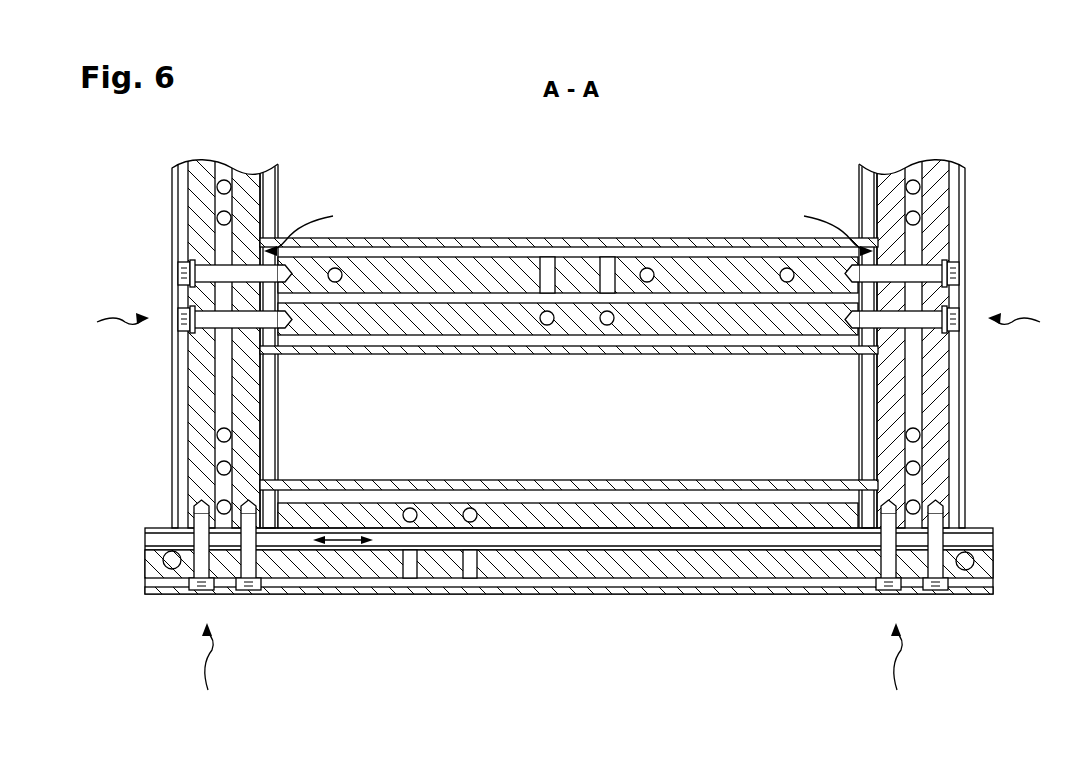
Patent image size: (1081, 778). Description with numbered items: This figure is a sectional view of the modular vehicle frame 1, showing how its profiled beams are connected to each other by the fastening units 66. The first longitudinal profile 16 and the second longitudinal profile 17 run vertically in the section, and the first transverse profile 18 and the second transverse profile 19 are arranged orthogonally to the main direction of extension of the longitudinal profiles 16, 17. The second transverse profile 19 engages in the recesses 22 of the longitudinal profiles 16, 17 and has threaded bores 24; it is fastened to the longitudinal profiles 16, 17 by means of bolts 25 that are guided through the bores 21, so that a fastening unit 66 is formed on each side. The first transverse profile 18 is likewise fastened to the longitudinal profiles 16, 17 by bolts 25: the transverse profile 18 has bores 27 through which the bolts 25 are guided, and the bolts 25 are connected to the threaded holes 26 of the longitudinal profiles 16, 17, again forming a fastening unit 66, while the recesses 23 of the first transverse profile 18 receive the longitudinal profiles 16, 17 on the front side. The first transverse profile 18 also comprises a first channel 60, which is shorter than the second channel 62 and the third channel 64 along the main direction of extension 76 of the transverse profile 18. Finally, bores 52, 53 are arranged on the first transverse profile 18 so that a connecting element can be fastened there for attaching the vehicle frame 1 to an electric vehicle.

The modular vehicle frame 1 is at (708, 160).
The first longitudinal profile 16 is at (233, 186).
The second longitudinal profile 17 is at (893, 186).
The first transverse profile 18 is at (640, 514).
The second transverse profile 19 is at (471, 268).
The bores 21 is at (192, 263).
The recesses 22 is at (568, 227).
The recesses 23 is at (980, 521).
The threaded bores 24 is at (206, 263).
The bolts 25 is at (177, 313).
The threaded holes 26 is at (181, 567).
The bores 27 is at (197, 592).
The bores 52 is at (410, 507).
The bores 53 is at (470, 578).
The first channel 60 is at (572, 489).
The second channel 62 is at (680, 541).
The third channel 64 is at (550, 590).
The fastening unit 66 is at (570, 510).
The main direction of extension 76 is at (350, 541).